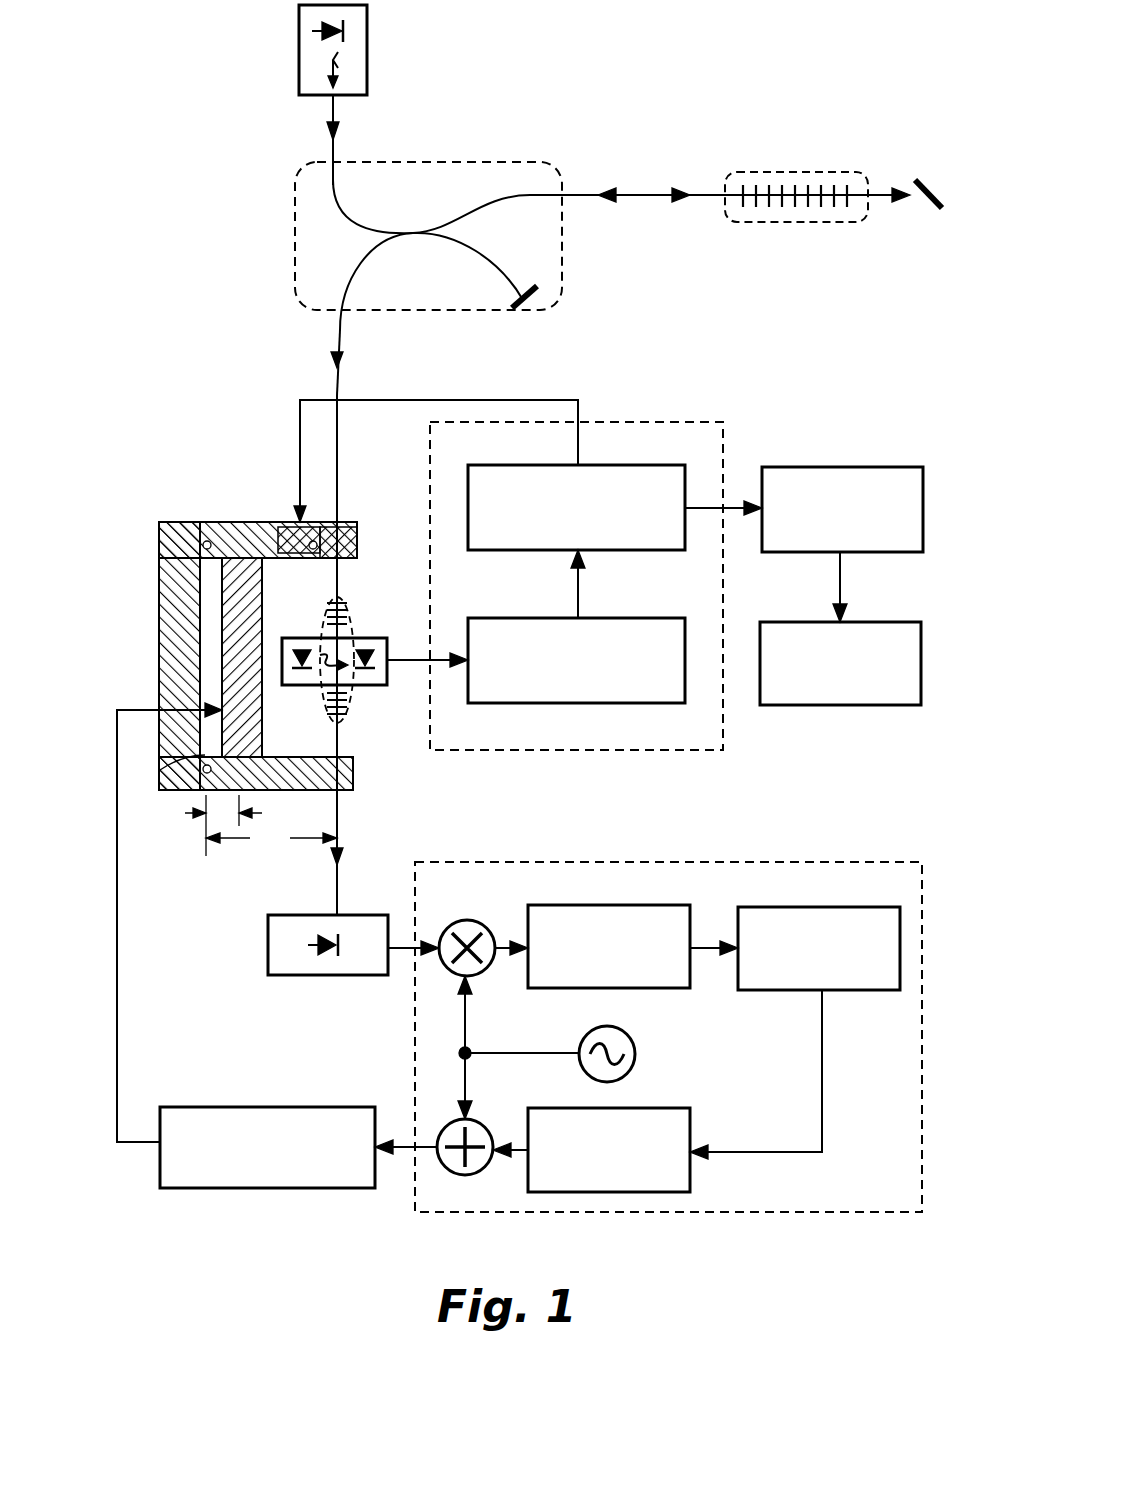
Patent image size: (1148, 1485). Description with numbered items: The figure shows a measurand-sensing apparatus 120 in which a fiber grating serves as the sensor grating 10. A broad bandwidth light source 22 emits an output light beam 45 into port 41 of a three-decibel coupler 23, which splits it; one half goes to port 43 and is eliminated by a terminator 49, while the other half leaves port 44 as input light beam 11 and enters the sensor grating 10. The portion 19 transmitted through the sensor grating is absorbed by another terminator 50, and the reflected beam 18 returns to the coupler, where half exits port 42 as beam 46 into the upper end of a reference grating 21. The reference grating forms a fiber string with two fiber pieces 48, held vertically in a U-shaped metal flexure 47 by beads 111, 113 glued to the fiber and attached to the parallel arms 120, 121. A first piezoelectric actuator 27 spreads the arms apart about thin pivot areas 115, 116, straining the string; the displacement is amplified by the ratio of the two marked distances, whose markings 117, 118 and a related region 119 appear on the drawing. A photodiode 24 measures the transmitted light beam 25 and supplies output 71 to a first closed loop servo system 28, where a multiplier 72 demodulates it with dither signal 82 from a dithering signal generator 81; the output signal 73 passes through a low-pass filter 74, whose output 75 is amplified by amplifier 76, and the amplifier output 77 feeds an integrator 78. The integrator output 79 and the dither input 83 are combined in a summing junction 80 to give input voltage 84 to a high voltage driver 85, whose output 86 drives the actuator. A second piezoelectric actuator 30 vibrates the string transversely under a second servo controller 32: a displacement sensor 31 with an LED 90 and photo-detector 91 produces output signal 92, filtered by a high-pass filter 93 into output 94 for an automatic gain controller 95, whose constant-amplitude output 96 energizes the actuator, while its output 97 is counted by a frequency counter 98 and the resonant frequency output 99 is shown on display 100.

The sensor grating 10 is at (752, 172).
The input light beam 11 is at (680, 188).
The reflected beam 18 is at (606, 188).
The transmitted portion of input beam 19 is at (888, 205).
The reference grating 21 is at (355, 605).
The broad bandwidth light source 22 is at (299, 33).
The 3 dB coupler 23 is at (395, 162).
The photodiode 24 is at (282, 976).
The transmitted light beam 25 is at (345, 855).
The first piezoelectric actuator 27 is at (240, 596).
The first closed loop servo system 28 is at (670, 1214).
The second piezoelectric actuator 30 is at (295, 525).
The displacement sensor 31 is at (374, 685).
The second closed loop servo controller 32 is at (670, 752).
The coupler port 41 is at (348, 206).
The coupler port 42 is at (363, 254).
The coupler port 43 is at (505, 265).
The coupler port 44 is at (495, 210).
The output light beam 45 is at (330, 132).
The light beam 46 is at (330, 362).
The flexure 47 is at (160, 655).
The optical fiber pieces 48 is at (345, 552).
The terminator 49 is at (535, 296).
The terminator 50 is at (932, 212).
The photodiode output 71 is at (400, 950).
The multiplier 72 is at (448, 972).
The multiplier output signal 73 is at (510, 930).
The low-pass filter 74 is at (642, 988).
The low-pass filter output 75 is at (710, 950).
The amplifier 76 is at (832, 992).
The amplifier output 77 is at (823, 1102).
The integrator 78 is at (692, 1172).
The integrator output 79 is at (512, 1155).
The summing junction 80 is at (448, 1125).
The dithering signal generator 81 is at (636, 1058).
The dither signal 82 is at (467, 1028).
The dither signal input 83 is at (468, 1088).
The input voltage 84 is at (392, 1150).
The high voltage driver 85 is at (192, 1188).
The driver output 86 is at (118, 912).
The LED 90 is at (290, 686).
The photo-detector 91 is at (362, 686).
The photo-detector output signal 92 is at (412, 656).
The high-pass filter 93 is at (612, 618).
The high-pass filter output 94 is at (575, 598).
The automatic gain controller 95 is at (527, 465).
The automatic gain controller output 96 is at (560, 400).
The automatic gain controller output 97 is at (736, 506).
The frequency counter 98 is at (818, 467).
The resonant frequency output 99 is at (840, 590).
The display 100 is at (830, 705).
The bead 111 is at (340, 525).
The bead 113 is at (350, 782).
The pivot area 115 is at (165, 772).
The pivot area 116 is at (185, 525).
The length L3 117 is at (205, 830).
The length L2 118 is at (280, 843).
The top bar 119 is at (312, 559).
The flexure arm 120 is at (208, 292).
The flexure arm 121 is at (281, 790).